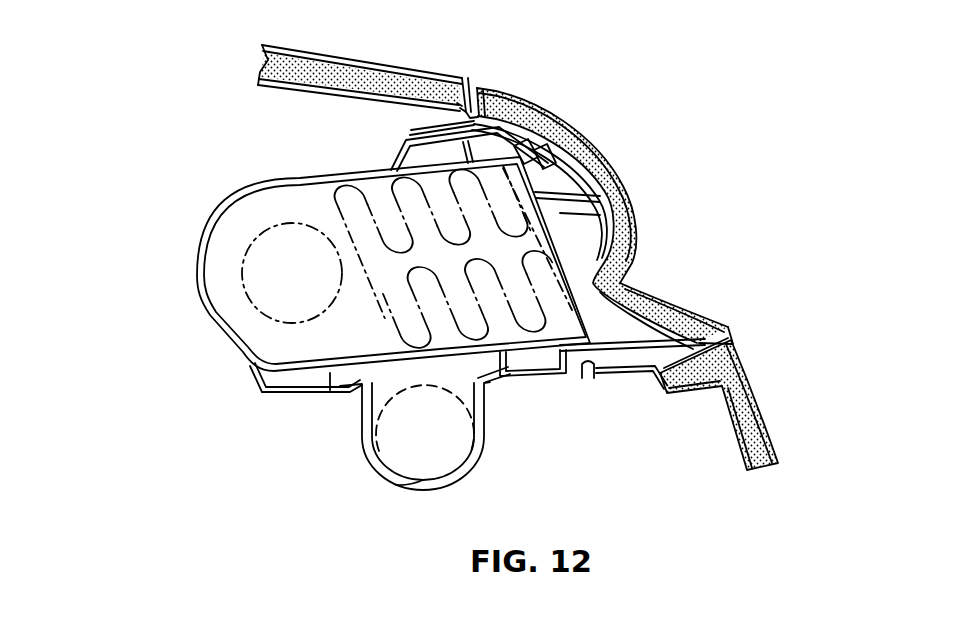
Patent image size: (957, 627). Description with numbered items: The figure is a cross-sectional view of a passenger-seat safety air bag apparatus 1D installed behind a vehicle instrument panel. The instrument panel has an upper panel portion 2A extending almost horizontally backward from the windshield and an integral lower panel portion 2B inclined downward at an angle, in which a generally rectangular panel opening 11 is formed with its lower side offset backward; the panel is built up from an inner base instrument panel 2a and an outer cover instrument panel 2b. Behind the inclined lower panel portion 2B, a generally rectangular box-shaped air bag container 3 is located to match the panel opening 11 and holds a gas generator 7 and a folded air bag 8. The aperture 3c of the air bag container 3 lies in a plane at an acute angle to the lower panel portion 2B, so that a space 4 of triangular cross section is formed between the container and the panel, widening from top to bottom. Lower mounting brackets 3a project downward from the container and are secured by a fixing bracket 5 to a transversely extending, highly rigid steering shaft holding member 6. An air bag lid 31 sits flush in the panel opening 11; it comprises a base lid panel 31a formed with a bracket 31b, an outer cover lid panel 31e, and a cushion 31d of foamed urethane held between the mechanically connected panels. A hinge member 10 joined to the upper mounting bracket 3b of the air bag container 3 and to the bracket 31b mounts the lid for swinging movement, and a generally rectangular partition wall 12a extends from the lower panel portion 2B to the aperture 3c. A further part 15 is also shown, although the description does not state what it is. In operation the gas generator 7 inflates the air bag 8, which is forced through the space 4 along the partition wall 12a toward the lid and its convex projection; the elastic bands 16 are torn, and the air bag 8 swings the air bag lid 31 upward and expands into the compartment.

The safety air bag apparatus 1D is at (192, 240).
The upper panel portion 2A is at (352, 58).
The lower panel portion 2B is at (767, 400).
The base instrument panel 2a is at (737, 428).
The cover instrument panel 2b is at (462, 80).
The air bag container 3 is at (273, 180).
The lower mounting brackets 3a is at (258, 382).
The upper mounting bracket 3b is at (398, 168).
The aperture 3c is at (603, 157).
The space 4 is at (633, 363).
The fixing bracket 5 is at (360, 392).
The steering shaft holding member 6 is at (396, 493).
The gas generator 7 is at (255, 302).
The air bag 8 is at (345, 262).
The hinge member 10 is at (447, 132).
The panel opening 11 is at (728, 331).
The partition wall 12a is at (606, 376).
The plate 15 is at (582, 215).
The elastic bands 16 is at (583, 366).
The air bag lid 31 is at (568, 108).
The base lid panel 31a is at (508, 92).
The bracket 31b is at (583, 139).
The cushion 31d is at (638, 240).
The cover lid panel 31e is at (692, 303).